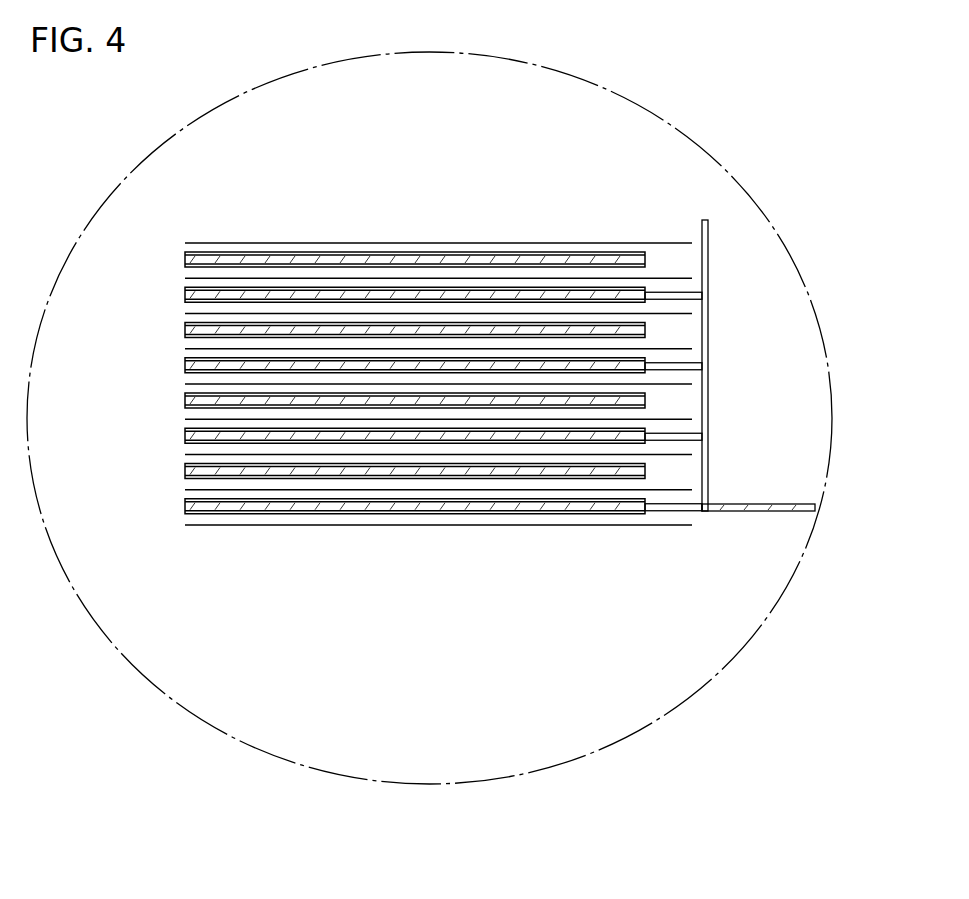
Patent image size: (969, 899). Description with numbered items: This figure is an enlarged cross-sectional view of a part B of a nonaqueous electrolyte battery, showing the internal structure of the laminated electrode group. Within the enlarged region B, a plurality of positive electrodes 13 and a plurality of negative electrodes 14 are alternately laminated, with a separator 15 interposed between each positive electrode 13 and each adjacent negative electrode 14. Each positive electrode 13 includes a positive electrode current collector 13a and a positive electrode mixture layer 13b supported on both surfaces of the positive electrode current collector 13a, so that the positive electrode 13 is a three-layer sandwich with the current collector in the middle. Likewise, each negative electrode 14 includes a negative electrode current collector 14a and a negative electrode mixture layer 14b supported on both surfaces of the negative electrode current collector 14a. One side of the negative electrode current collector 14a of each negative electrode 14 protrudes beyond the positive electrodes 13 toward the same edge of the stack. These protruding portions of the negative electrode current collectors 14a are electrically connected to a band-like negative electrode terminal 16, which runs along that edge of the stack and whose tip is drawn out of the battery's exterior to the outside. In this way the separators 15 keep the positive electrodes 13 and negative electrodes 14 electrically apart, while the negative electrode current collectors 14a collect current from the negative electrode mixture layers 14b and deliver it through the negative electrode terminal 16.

The positive electrode 13 is at (346, 390).
The positive electrode current collector 13a is at (185, 471).
The positive electrode mixture layer 13b is at (185, 465).
The negative electrode 14 is at (432, 441).
The negative electrode current collector 14a is at (690, 293).
The negative electrode mixture layer 14b is at (185, 503).
The separator 15 is at (508, 243).
The negative electrode terminal 16 is at (758, 512).
The part B is at (694, 693).